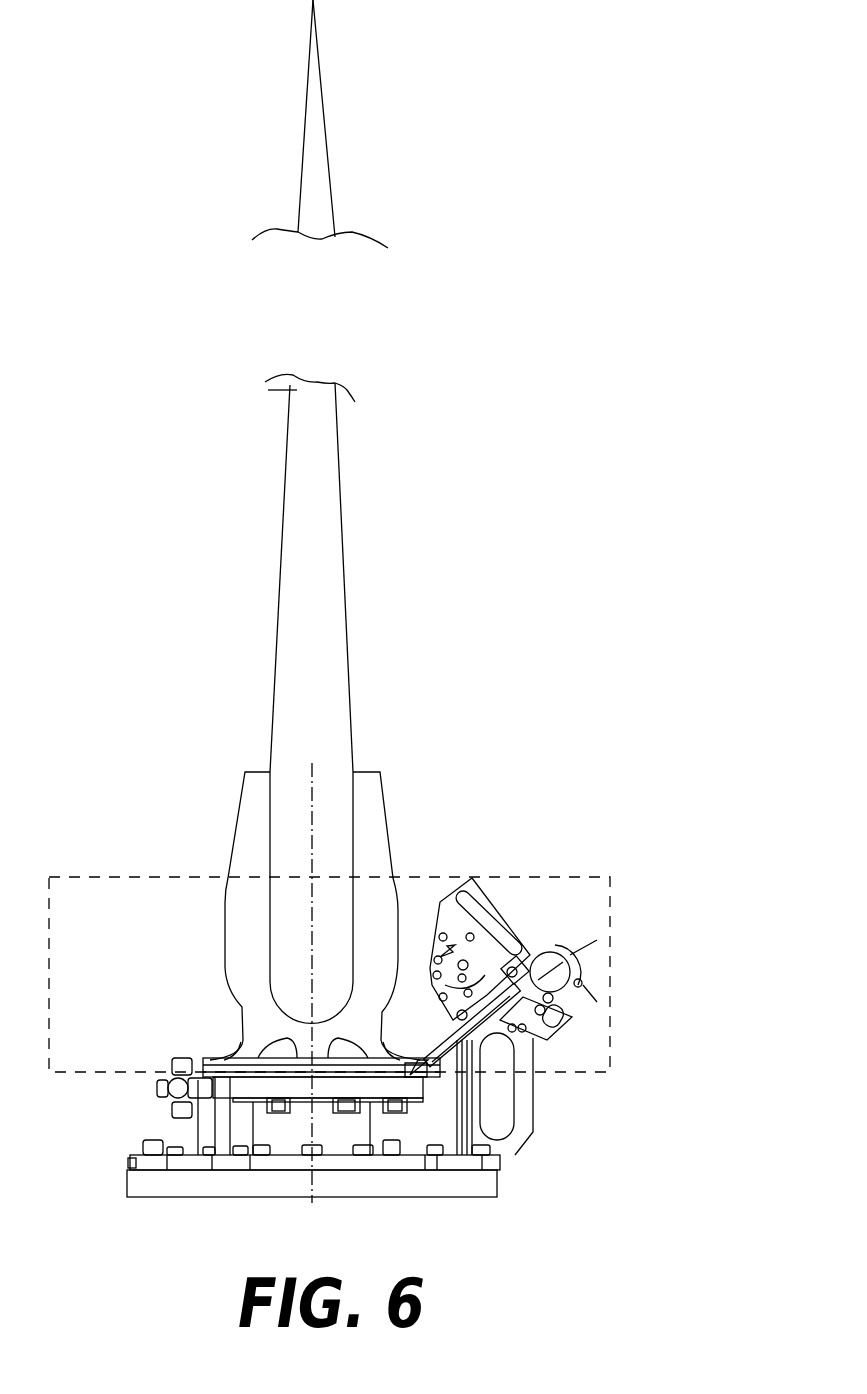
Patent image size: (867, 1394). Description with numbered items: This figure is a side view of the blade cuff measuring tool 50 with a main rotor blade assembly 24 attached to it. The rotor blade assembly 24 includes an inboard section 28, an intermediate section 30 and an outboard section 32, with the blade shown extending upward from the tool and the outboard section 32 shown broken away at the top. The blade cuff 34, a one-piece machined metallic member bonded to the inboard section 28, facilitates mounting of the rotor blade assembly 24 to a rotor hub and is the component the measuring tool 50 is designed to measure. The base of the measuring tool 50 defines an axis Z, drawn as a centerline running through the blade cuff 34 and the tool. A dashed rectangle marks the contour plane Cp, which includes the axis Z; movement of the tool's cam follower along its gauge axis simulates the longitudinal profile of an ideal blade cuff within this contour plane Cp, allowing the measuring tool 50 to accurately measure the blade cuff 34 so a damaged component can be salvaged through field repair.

The main rotor blade assembly 24 is at (355, 601).
The inboard section 28 is at (295, 727).
The intermediate section 30 is at (270, 390).
The outboard section 32 is at (298, 176).
The blade cuff 34 is at (397, 838).
The axis Z is at (313, 807).
The contour plane Cp is at (610, 877).
The measuring tool 50 is at (620, 1100).